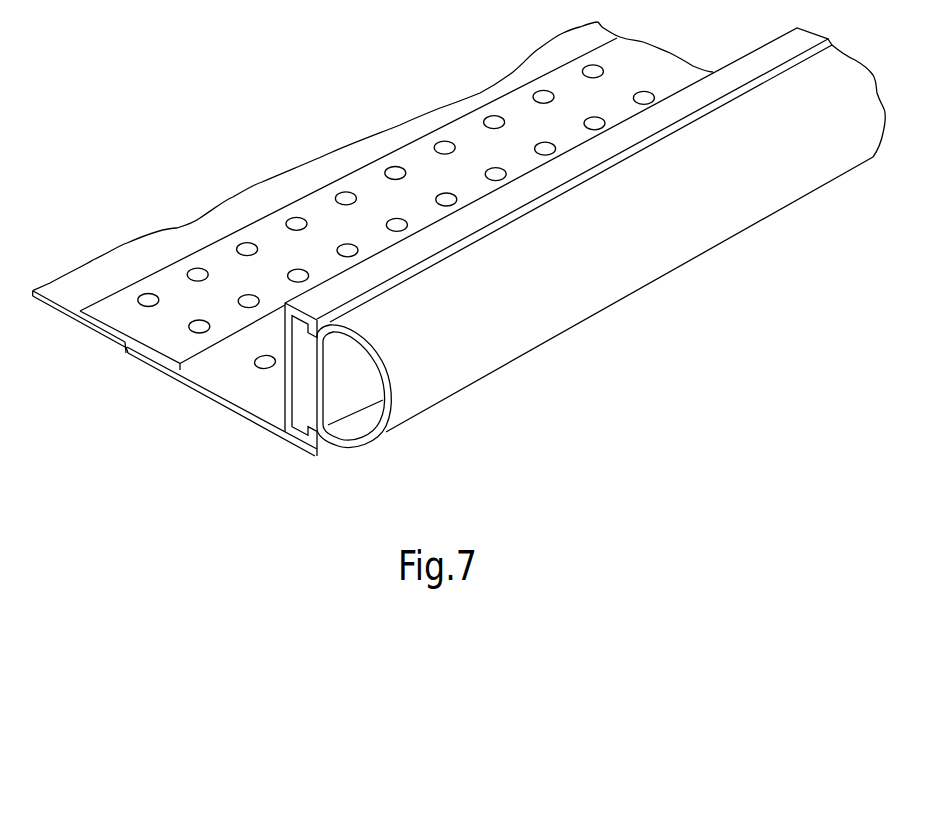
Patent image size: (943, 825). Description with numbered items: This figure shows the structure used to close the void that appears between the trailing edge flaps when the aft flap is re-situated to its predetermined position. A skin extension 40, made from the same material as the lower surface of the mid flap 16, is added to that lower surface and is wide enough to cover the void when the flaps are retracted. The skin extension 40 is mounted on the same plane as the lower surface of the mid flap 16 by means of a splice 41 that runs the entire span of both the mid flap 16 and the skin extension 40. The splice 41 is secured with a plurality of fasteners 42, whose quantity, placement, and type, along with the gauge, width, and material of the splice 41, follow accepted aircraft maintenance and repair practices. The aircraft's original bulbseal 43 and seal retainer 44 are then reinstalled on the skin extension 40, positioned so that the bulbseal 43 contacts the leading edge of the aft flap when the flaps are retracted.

The mid flap 16 is at (65, 297).
The skin extension 40 is at (210, 403).
The splice 41 is at (320, 209).
The fastener 42 is at (243, 243).
The bulbseal 43 is at (483, 352).
The seal retainer 44 is at (290, 398).